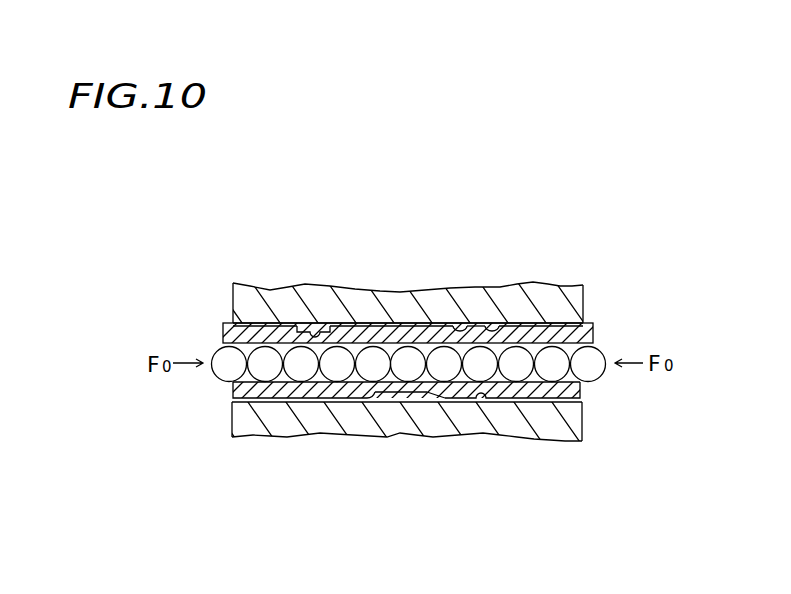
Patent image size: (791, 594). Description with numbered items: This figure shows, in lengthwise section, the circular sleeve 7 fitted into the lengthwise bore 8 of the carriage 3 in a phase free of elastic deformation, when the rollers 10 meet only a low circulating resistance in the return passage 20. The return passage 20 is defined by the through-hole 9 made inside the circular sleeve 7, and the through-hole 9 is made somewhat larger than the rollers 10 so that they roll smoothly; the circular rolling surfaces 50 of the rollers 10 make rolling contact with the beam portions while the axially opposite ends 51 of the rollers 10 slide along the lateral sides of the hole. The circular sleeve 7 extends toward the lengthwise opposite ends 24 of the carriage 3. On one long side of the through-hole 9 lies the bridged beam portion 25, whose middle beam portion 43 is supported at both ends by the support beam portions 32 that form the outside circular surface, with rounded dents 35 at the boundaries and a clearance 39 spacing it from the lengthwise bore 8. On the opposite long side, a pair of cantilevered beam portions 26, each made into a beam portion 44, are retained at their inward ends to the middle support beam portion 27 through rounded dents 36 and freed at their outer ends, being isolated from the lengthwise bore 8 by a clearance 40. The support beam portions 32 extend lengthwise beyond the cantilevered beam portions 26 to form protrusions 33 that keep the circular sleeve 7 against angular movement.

The carriage 3 is at (367, 300).
The circular sleeve 7 is at (546, 316).
The lengthwise bore 8 is at (472, 323).
The through-hole 9 is at (345, 325).
The roller 10 is at (303, 372).
The return passage 20 is at (398, 325).
The lengthwise opposite end 24 is at (585, 305).
The bridged beam portion 25 is at (441, 337).
The cantilevered beam portion 26 is at (267, 398).
The middle support beam portion 27 is at (413, 400).
The support beam portion 32 is at (265, 322).
The protrusion 33 is at (224, 324).
The rounded dent 35 is at (322, 330).
The rounded dent 36 is at (384, 398).
The clearance 39 is at (416, 325).
The clearance 40 is at (340, 375).
The middle beam portion 43 is at (383, 325).
The beam portion 44 is at (232, 437).
The circular rolling surface 50 is at (283, 400).
The axially opposite end 51 is at (298, 322).